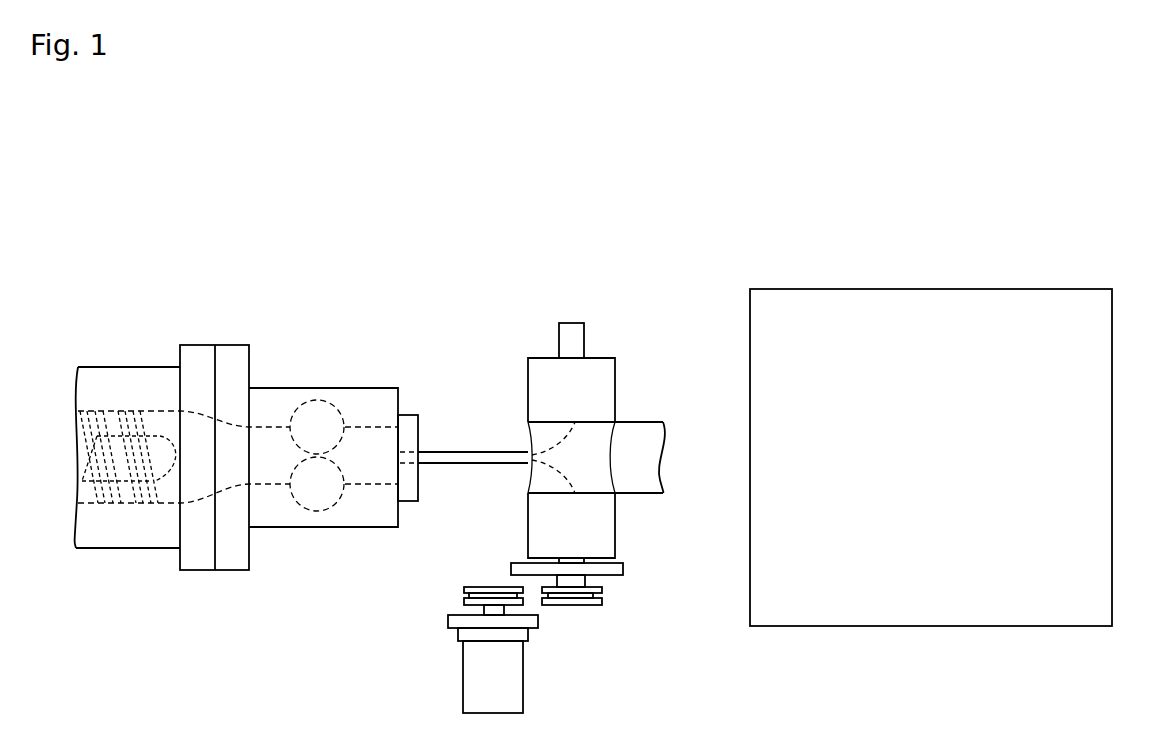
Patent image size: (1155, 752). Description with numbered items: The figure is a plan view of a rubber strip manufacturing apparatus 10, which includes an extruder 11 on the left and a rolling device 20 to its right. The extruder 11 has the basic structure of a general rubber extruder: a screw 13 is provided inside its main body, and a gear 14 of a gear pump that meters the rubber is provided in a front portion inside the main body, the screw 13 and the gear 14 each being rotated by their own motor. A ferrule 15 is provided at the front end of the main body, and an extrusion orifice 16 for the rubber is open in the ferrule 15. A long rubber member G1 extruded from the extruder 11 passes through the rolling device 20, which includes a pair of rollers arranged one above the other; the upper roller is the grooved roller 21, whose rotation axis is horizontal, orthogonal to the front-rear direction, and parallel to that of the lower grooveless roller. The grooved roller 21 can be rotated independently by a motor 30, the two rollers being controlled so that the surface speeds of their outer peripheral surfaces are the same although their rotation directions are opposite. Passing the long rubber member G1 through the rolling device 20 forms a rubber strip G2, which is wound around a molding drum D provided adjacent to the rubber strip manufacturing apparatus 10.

The rubber strip manufacturing apparatus 10 is at (431, 196).
The extruder 11 is at (250, 314).
The screw 13 is at (103, 409).
The gear 14 is at (318, 399).
The ferrule 15 is at (412, 416).
The extrusion orifice 16 is at (427, 466).
The rolling device 20 is at (571, 297).
The grooved roller 21 is at (541, 372).
The motor 30 is at (487, 680).
The long rubber member G1 is at (472, 454).
The rubber strip G2 is at (643, 430).
The molding drum D is at (930, 305).